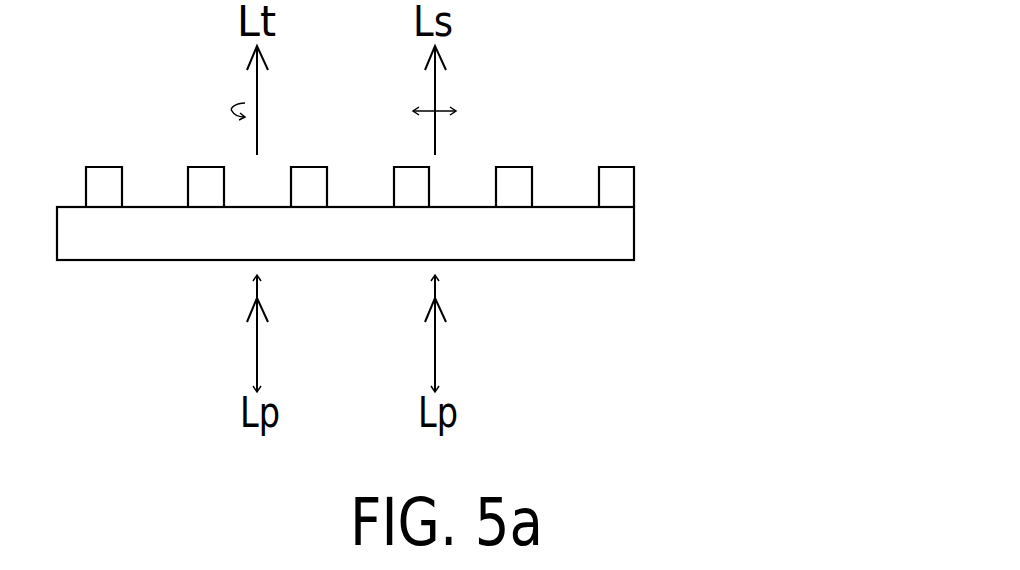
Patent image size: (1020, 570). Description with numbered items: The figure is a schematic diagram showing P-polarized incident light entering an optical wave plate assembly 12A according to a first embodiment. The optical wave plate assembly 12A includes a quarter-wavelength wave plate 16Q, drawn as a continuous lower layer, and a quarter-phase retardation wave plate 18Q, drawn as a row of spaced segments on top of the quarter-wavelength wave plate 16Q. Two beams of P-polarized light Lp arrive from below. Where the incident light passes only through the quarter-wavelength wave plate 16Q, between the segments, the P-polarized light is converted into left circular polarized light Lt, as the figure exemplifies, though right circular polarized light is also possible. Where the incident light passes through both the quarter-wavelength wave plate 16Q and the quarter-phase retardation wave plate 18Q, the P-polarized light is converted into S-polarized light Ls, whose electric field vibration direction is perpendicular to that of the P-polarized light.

The optical wave plate assembly 12A is at (459, 209).
The quarter-wavelength wave plate 16Q is at (621, 236).
The quarter-phase retardation wave plate 18Q is at (644, 193).